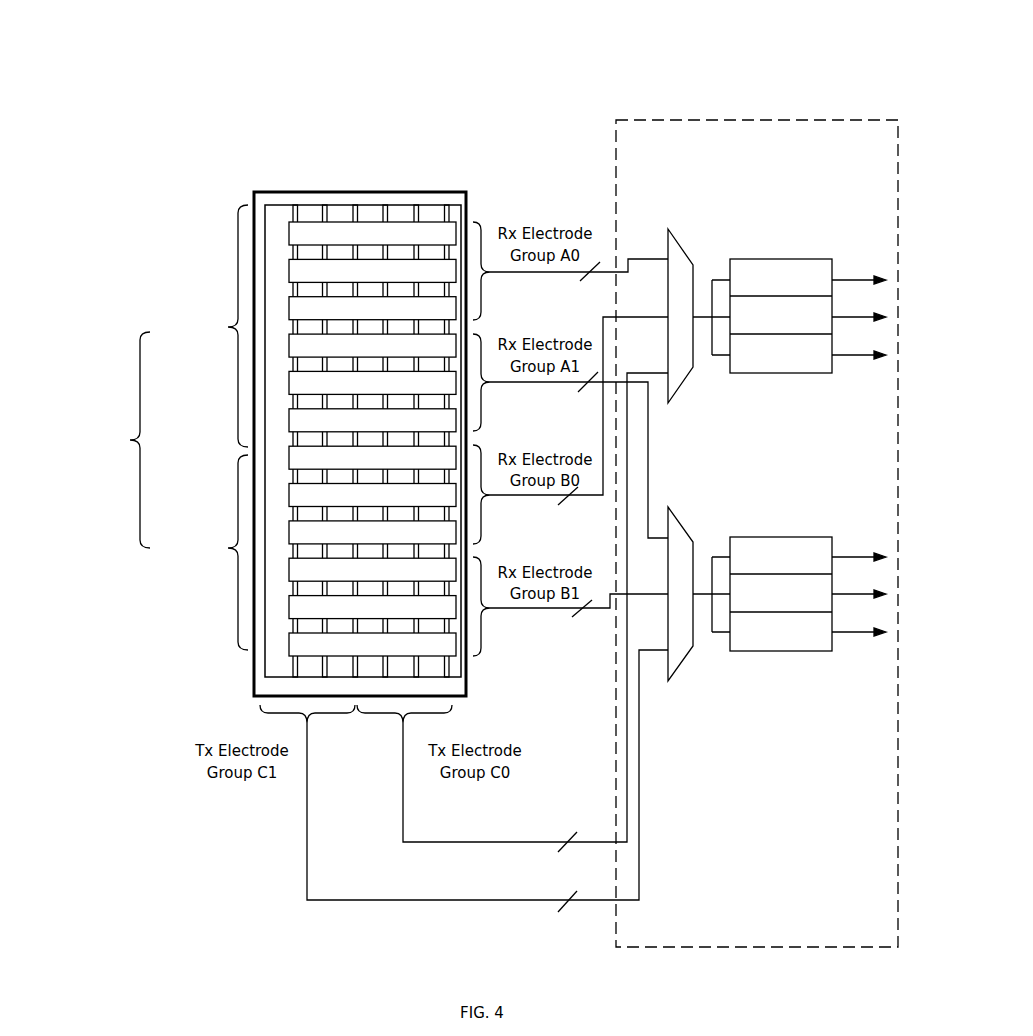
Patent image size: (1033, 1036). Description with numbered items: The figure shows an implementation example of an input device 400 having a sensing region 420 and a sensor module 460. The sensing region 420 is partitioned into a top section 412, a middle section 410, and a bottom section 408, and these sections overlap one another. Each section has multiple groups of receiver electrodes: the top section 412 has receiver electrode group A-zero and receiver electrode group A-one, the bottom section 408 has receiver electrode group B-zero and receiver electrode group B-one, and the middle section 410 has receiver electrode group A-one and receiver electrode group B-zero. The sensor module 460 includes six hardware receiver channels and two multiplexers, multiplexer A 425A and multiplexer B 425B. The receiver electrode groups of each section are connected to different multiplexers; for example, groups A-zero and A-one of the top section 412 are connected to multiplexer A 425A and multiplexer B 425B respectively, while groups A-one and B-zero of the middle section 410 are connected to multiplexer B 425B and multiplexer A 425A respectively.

The input device 400 is at (785, 106).
The sensing region 420 is at (354, 182).
The top section 412 is at (206, 326).
The middle section 410 is at (111, 440).
The bottom section 408 is at (205, 552).
The multiplexer A 425A is at (680, 363).
The multiplexer B 425B is at (678, 640).
The sensor module 460 is at (755, 888).